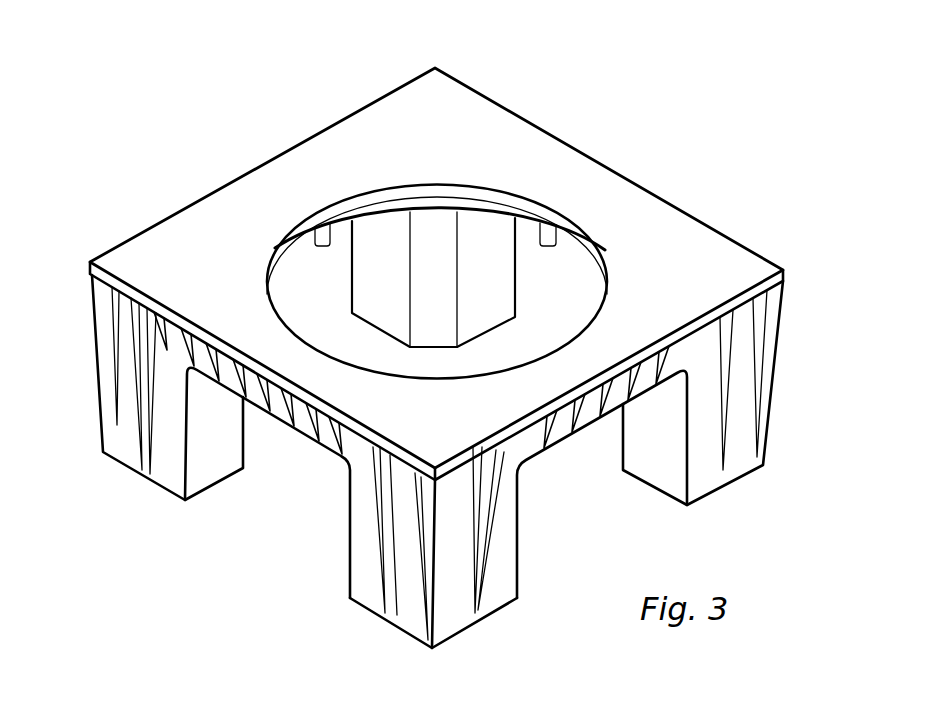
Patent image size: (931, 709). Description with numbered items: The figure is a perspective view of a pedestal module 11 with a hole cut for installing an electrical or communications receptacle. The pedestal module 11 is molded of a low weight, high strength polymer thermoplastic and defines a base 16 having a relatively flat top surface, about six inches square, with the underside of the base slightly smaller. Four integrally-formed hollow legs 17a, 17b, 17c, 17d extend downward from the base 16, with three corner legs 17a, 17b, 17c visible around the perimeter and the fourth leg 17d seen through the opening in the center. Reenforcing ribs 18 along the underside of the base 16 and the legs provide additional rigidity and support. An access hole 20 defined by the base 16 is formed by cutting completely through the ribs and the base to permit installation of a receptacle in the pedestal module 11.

The pedestal module 11 is at (768, 250).
The base 16 is at (725, 277).
The leg 17a is at (750, 450).
The leg 17b is at (457, 612).
The leg 17c is at (167, 470).
The leg 17d is at (492, 296).
The reenforcing ribs 18 is at (706, 352).
The access hole 20 is at (537, 212).